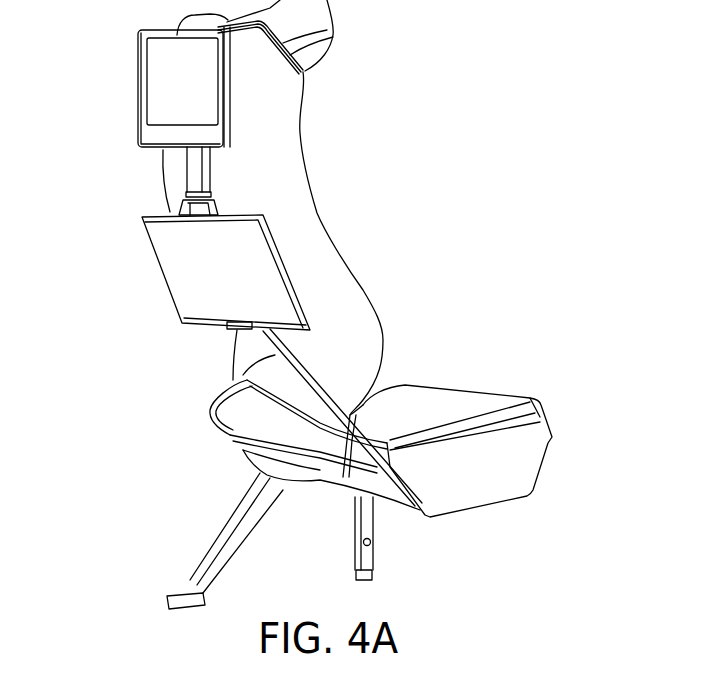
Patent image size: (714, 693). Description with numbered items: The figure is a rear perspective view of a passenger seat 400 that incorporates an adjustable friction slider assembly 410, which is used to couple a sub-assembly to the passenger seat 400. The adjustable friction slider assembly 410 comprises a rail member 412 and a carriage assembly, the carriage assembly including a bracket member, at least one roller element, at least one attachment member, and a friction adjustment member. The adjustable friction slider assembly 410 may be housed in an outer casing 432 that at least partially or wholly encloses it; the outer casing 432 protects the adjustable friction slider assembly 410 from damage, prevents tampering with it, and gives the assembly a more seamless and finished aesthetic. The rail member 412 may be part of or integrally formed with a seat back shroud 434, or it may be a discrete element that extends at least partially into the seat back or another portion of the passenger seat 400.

The passenger seat 400 is at (273, 238).
The adjustable friction slider assembly 410 is at (237, 202).
The rail member 412 is at (197, 172).
The outer casing 432 is at (260, 215).
The seat back shroud 434 is at (220, 387).